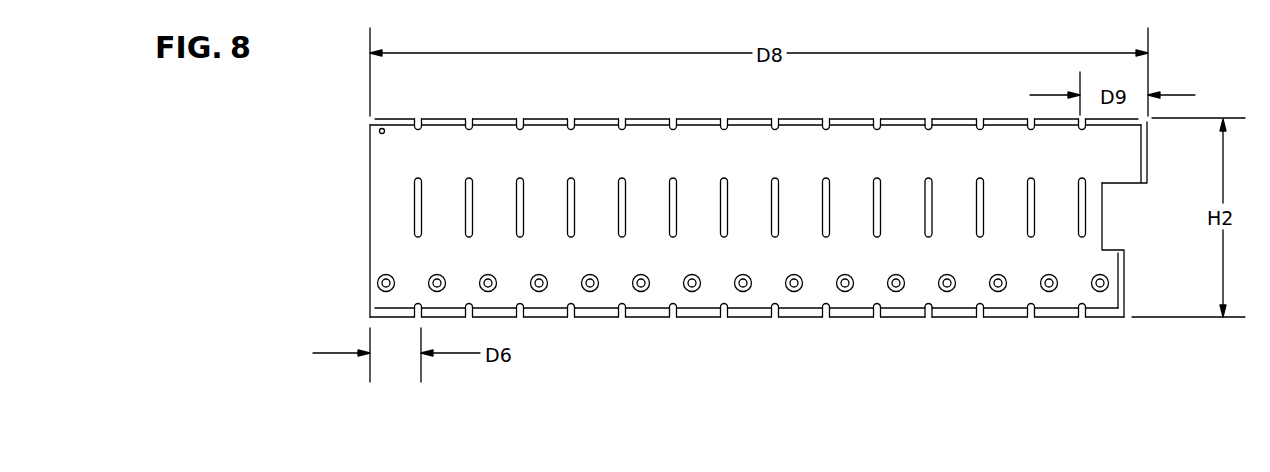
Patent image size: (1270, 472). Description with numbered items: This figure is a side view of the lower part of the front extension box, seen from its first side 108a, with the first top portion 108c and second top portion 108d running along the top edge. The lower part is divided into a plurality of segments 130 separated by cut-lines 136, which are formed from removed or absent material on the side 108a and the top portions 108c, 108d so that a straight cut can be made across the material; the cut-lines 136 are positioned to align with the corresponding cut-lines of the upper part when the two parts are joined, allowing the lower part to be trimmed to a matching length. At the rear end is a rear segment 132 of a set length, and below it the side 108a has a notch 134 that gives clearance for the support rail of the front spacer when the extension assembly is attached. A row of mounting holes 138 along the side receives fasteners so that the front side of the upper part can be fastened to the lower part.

The first side 108a is at (1065, 300).
The first top portion 108c is at (755, 103).
The second top portion 108d is at (597, 119).
The segments 130 is at (545, 317).
The rear segment 132 is at (1118, 157).
The notch 134 is at (1133, 210).
The cut-lines 136 is at (777, 119).
The mounting holes 138 is at (948, 291).